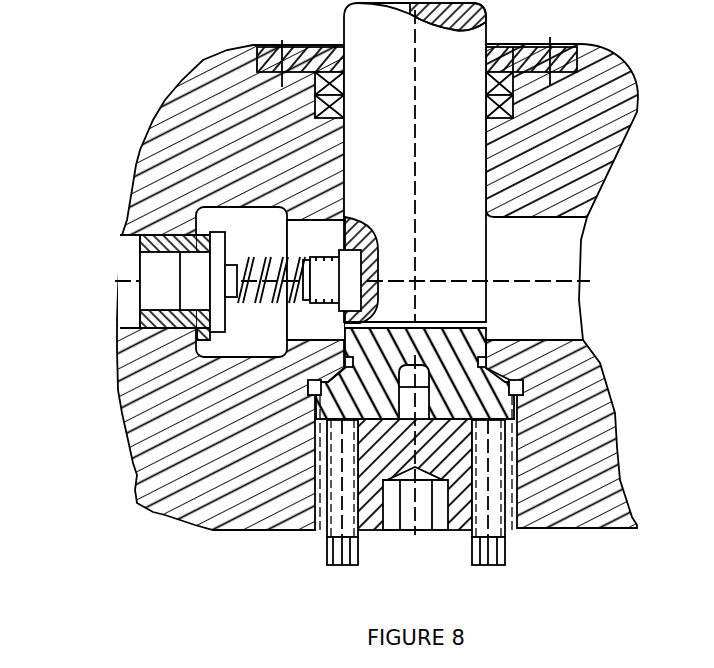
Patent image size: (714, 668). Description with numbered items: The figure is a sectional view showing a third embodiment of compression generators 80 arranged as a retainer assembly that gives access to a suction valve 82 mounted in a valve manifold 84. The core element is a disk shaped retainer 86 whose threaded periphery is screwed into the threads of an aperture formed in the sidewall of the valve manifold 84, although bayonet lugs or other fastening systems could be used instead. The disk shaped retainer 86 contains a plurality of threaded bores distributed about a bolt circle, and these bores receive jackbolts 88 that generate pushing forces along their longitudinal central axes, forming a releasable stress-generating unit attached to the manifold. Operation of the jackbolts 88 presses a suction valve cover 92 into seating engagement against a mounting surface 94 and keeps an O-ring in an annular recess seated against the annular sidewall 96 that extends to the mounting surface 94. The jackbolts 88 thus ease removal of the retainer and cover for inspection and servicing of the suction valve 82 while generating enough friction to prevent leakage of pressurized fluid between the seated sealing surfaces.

The compression generators 80 is at (373, 532).
The suction valve 82 is at (137, 317).
The valve manifold 84 is at (270, 530).
The disk shaped retainer 86 is at (457, 530).
The jackbolts 88 is at (342, 565).
The suction valve cover 92 is at (487, 333).
The mounting surface 94 is at (555, 370).
The annular sidewall 96 is at (344, 333).